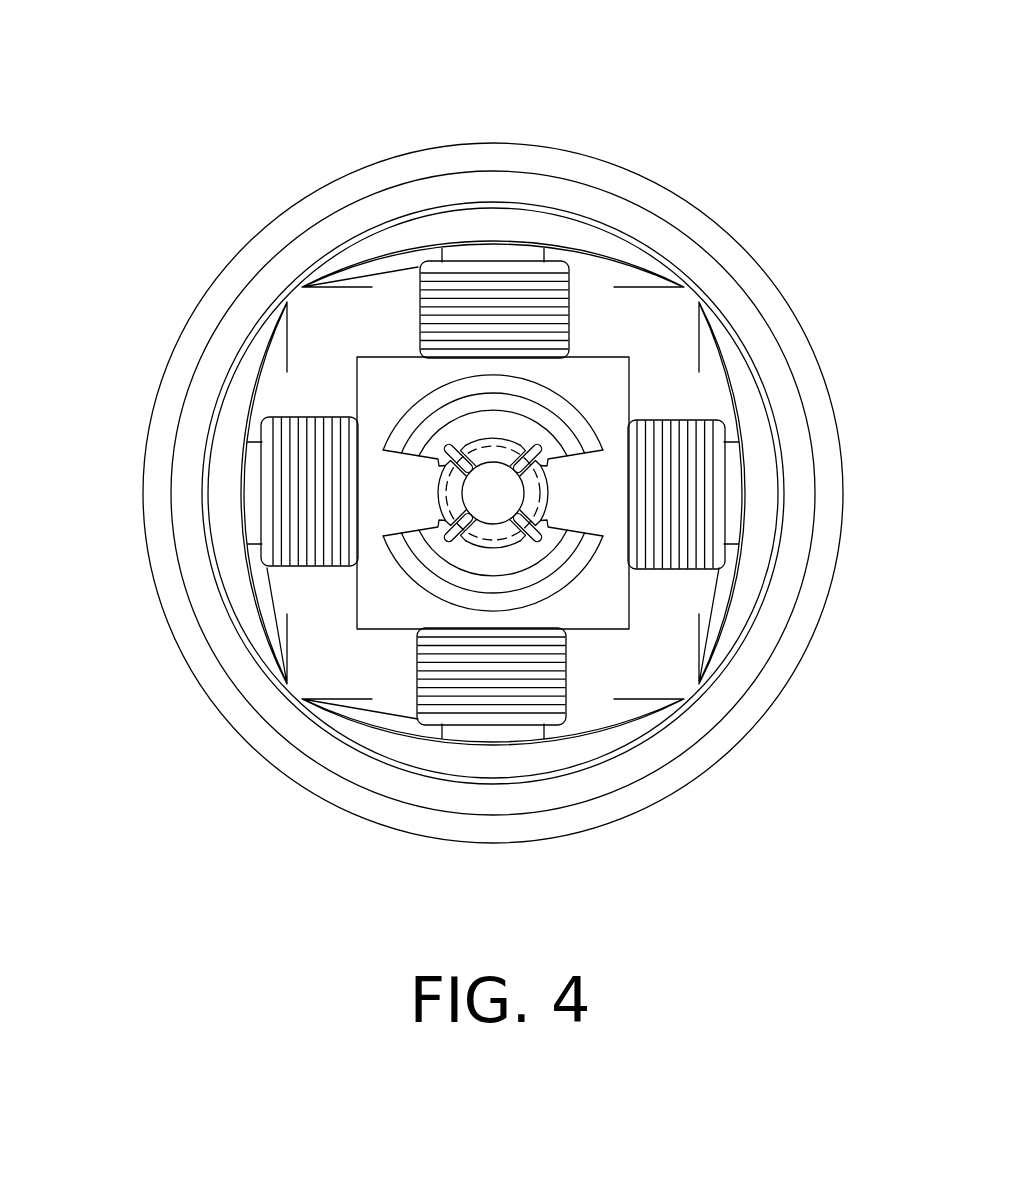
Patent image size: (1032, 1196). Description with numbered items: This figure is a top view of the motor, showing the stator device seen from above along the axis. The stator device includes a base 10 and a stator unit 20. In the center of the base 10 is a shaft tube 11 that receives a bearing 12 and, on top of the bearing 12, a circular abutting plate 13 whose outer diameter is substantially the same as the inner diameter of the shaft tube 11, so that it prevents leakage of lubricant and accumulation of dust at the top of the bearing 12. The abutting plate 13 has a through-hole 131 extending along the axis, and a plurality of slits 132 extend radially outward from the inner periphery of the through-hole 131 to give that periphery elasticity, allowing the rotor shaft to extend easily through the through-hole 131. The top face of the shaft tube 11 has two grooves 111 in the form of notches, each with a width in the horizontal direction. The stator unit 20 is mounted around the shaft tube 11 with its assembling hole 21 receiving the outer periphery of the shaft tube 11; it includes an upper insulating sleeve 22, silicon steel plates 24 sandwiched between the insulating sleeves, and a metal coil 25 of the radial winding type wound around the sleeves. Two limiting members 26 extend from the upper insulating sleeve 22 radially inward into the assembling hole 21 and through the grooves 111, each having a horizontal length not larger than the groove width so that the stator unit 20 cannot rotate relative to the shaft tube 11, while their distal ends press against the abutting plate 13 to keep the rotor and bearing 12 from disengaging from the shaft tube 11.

The base 10 is at (622, 170).
The shaft tube 11 is at (522, 410).
The groove 111 is at (403, 451).
The bearing 12 is at (499, 450).
The abutting plate 13 is at (475, 557).
The through-hole 131 is at (488, 478).
The slit 132 is at (448, 537).
The stator unit 20 is at (690, 702).
The assembling hole 21 is at (561, 590).
The upper insulating sleeve 22 is at (608, 378).
The silicon steel plate 24 is at (757, 585).
The metal coil 25 is at (684, 451).
The limiting member 26 is at (403, 492).